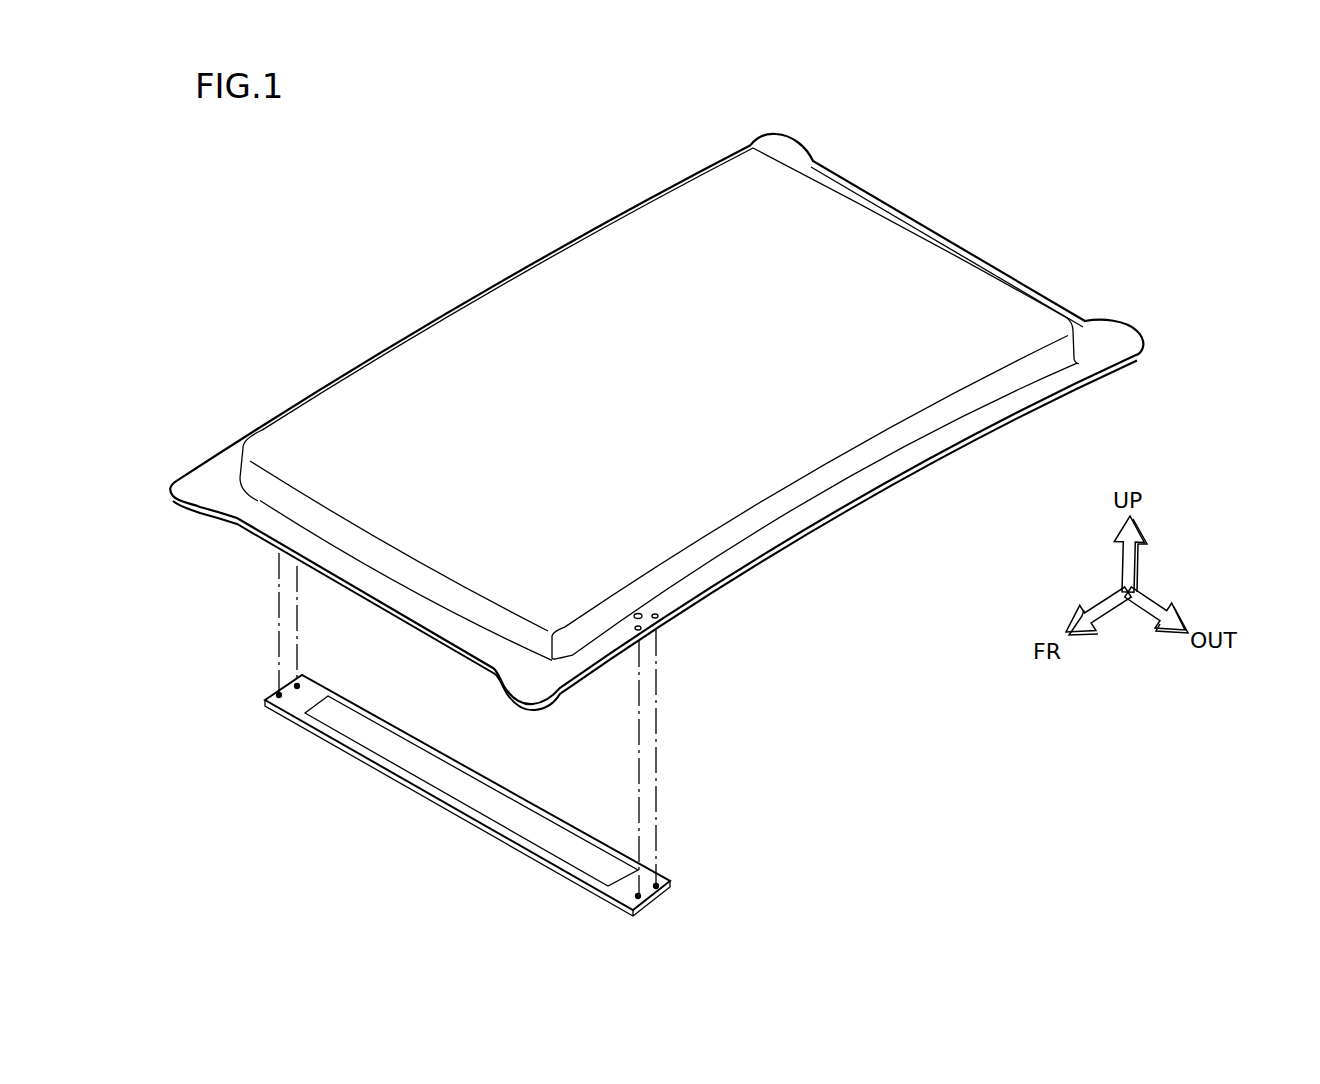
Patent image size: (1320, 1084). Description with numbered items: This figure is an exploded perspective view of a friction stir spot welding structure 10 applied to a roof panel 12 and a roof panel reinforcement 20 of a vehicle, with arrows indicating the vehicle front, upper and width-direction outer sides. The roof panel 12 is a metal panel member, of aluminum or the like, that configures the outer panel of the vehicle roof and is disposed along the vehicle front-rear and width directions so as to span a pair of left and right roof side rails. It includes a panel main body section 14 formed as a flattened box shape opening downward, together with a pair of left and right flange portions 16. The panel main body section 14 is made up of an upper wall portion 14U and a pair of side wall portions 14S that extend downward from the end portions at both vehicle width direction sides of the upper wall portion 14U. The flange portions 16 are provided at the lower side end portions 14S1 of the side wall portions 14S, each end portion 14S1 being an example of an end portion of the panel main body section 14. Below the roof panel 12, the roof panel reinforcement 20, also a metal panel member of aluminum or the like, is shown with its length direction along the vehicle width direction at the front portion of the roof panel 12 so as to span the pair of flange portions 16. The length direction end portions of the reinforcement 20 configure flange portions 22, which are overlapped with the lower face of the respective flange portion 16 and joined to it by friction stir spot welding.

The friction stir spot welding structure 10 is at (656, 523).
The roof panel 12 is at (656, 415).
The panel main body section 14 is at (656, 415).
The upper wall portion 14U is at (917, 262).
The side wall portions 14S is at (668, 483).
The lower side end portions 14S1 is at (863, 462).
The flange portions 16 is at (362, 358).
The roof panel reinforcement 20 is at (446, 801).
The flange portions 22 is at (297, 702).